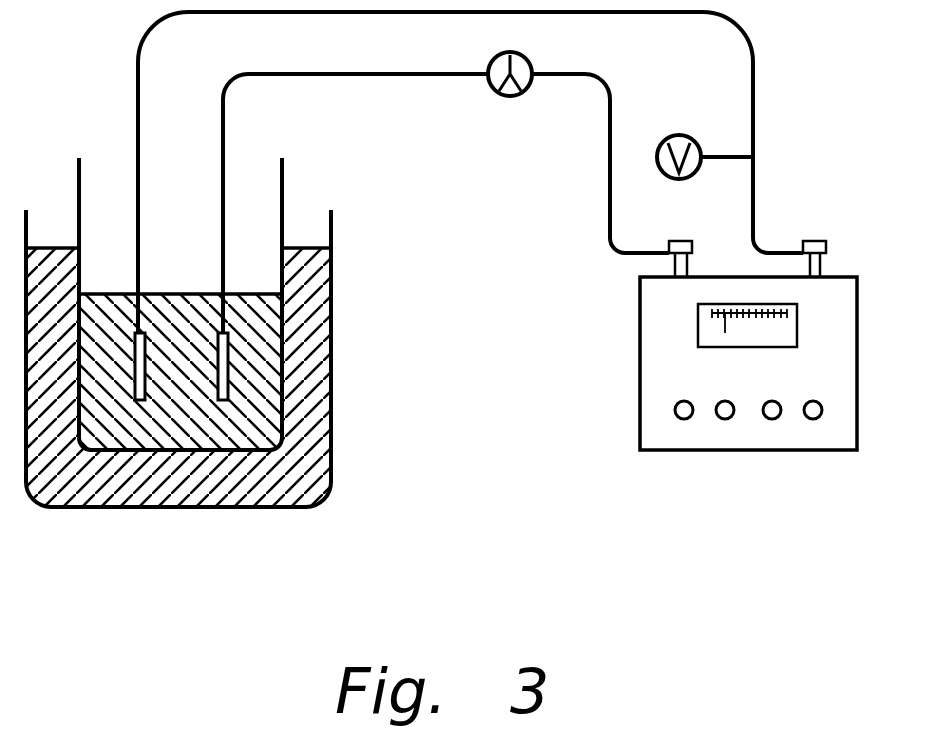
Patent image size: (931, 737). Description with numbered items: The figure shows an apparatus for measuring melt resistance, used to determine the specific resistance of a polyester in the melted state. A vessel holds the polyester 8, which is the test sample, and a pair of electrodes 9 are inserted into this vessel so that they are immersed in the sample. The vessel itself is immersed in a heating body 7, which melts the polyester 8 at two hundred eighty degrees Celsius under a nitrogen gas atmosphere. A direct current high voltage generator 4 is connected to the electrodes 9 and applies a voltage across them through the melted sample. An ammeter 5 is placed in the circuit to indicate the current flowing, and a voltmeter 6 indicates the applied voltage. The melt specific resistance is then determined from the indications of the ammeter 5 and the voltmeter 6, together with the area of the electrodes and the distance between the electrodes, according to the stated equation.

The direct current high voltage generator 4 is at (857, 375).
The ammeter 5 is at (490, 85).
The voltmeter 6 is at (697, 134).
The heating body 7 is at (308, 323).
The polyester 8 is at (270, 397).
The pair of electrodes 9 is at (147, 402).